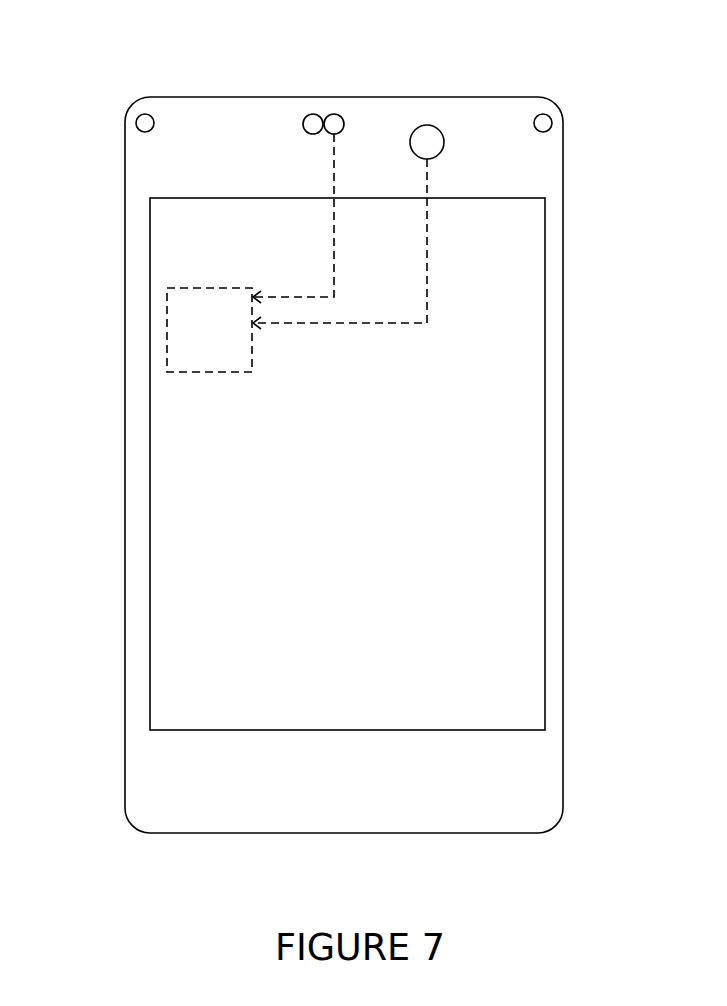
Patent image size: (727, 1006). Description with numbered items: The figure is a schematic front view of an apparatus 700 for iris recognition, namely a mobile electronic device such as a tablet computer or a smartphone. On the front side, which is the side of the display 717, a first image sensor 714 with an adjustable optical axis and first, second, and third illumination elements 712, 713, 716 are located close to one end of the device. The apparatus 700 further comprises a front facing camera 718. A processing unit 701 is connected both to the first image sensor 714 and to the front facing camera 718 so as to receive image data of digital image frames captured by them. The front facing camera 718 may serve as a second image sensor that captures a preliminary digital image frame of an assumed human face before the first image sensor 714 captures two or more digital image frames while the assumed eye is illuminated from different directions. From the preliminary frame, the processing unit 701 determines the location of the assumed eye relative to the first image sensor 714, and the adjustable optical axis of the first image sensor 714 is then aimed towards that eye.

The apparatus 700 is at (125, 347).
The processing unit 701 is at (167, 332).
The first illumination element 712 is at (304, 126).
The second illumination element 713 is at (137, 123).
The first image sensor 714 is at (344, 123).
The third illumination element 716 is at (552, 122).
The display 717 is at (545, 347).
The front facing camera 718 is at (445, 142).